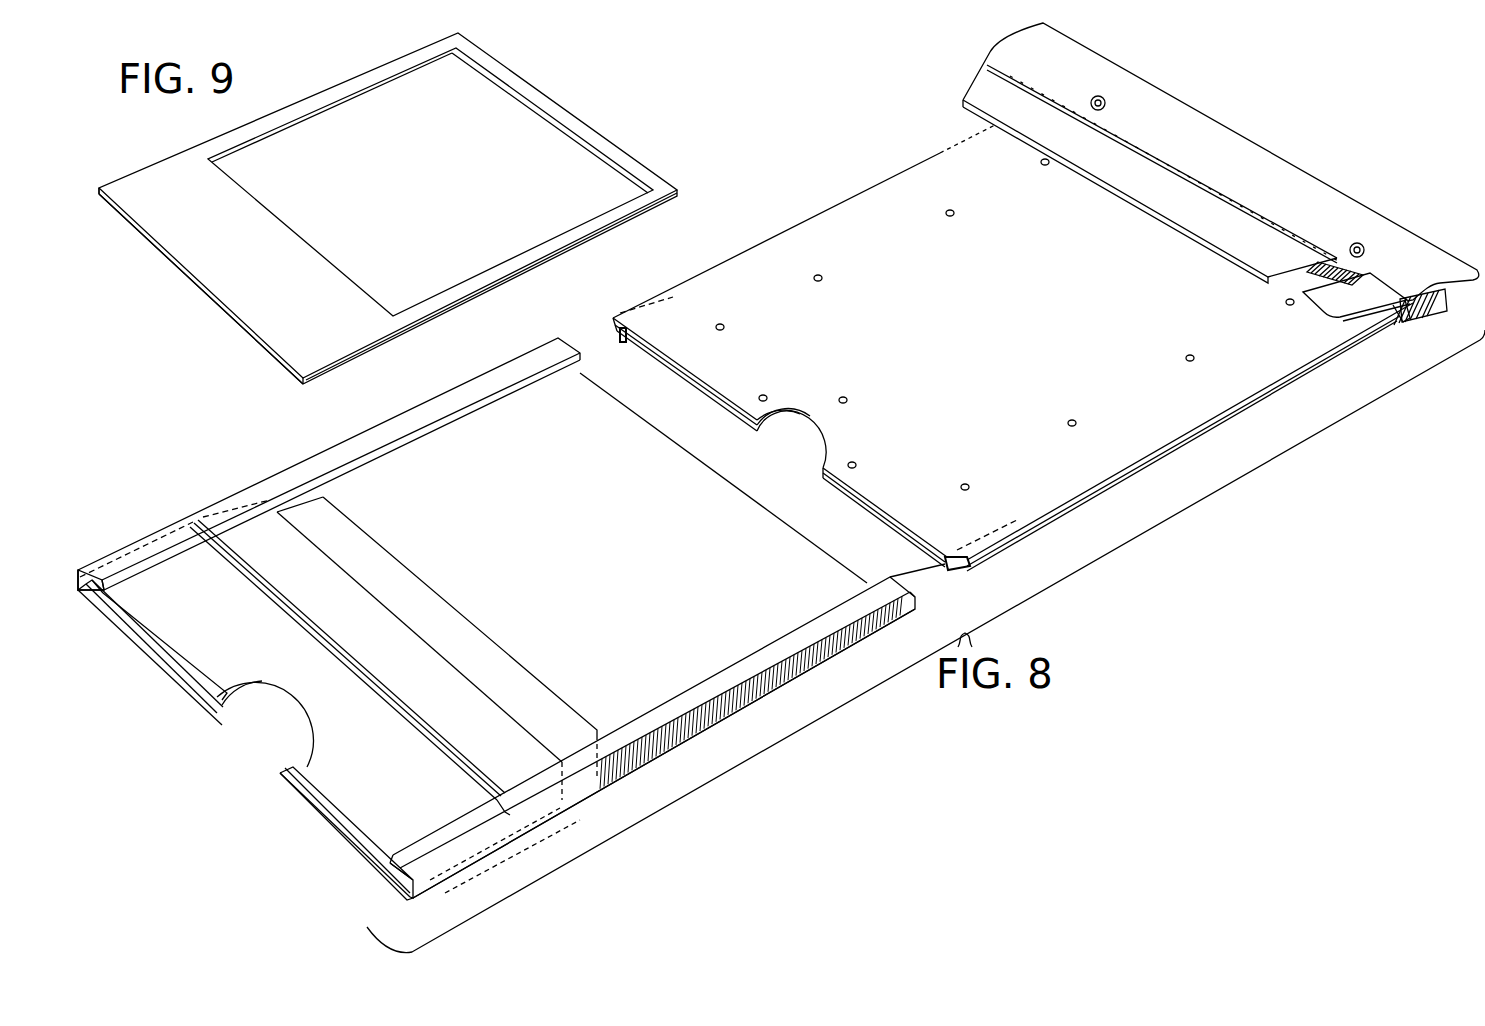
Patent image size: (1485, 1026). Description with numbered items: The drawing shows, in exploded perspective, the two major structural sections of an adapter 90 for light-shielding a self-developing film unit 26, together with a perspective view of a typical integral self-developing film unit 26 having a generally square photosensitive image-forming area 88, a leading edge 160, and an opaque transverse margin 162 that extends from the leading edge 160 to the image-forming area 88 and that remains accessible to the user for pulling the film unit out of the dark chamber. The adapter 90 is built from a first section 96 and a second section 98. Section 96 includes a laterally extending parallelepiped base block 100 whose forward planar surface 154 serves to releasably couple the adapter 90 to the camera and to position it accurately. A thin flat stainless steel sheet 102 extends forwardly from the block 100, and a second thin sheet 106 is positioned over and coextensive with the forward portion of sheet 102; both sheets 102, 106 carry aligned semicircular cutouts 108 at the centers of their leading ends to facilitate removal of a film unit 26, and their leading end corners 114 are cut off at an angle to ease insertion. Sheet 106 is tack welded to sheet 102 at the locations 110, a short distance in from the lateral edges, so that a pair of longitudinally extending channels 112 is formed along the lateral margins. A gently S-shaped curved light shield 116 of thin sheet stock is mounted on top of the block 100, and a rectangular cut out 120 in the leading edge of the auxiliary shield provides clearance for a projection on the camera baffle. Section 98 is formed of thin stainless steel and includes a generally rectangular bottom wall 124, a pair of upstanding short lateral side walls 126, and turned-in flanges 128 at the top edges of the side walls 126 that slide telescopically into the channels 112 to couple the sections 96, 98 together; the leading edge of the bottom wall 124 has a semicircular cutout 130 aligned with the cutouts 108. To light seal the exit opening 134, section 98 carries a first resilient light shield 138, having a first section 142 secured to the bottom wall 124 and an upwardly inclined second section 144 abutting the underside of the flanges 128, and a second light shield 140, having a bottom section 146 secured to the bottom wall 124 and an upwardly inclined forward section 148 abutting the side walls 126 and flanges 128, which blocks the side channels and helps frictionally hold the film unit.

In FIG. 9, the self-developing film unit 26 is at (638, 150).
In FIG. 9, the photosensitive image-forming area 88 is at (417, 181).
In FIG. 9, the leading edge 160 is at (223, 303).
In FIG. 9, the opaque transverse margin 162 is at (197, 242).
In FIG. 8, the adapter 90 is at (1077, 600).
In FIG. 8, the adapter section 96 is at (1228, 428).
In FIG. 8, the adapter section 98 is at (722, 735).
In FIG. 8, the base block 100 is at (1430, 320).
In FIG. 8, the thin sheet 102 is at (890, 523).
In FIG. 8, the second thin sheet 106 is at (878, 483).
In FIG. 8, the semicircular cutouts 108 is at (787, 413).
In FIG. 8, the tack weld locations 110 is at (822, 277).
In FIG. 8, the longitudinal channels 112 is at (607, 327).
In FIG. 8, the leading end corners 114 is at (622, 340).
In FIG. 8, the light shield 116 is at (1305, 192).
In FIG. 8, the rectangular cut out 120 is at (1305, 287).
In FIG. 8, the bottom wall 124 is at (597, 587).
In FIG. 8, the lateral side walls 126 is at (846, 645).
In FIG. 8, the turned in flange 128 is at (517, 380).
In FIG. 8, the semicircular cutout 130 is at (260, 720).
In FIG. 8, the exit opening 134 is at (333, 817).
In FIG. 8, the first light shield 138 is at (388, 537).
In FIG. 8, the second light shield 140 is at (157, 603).
In FIG. 8, the first section 142 is at (457, 640).
In FIG. 8, the second section 144 is at (320, 610).
In FIG. 8, the bottom section 146 is at (223, 590).
In FIG. 8, the forward section 148 is at (167, 640).
In FIG. 8, the forward planar surface 154 is at (1403, 323).